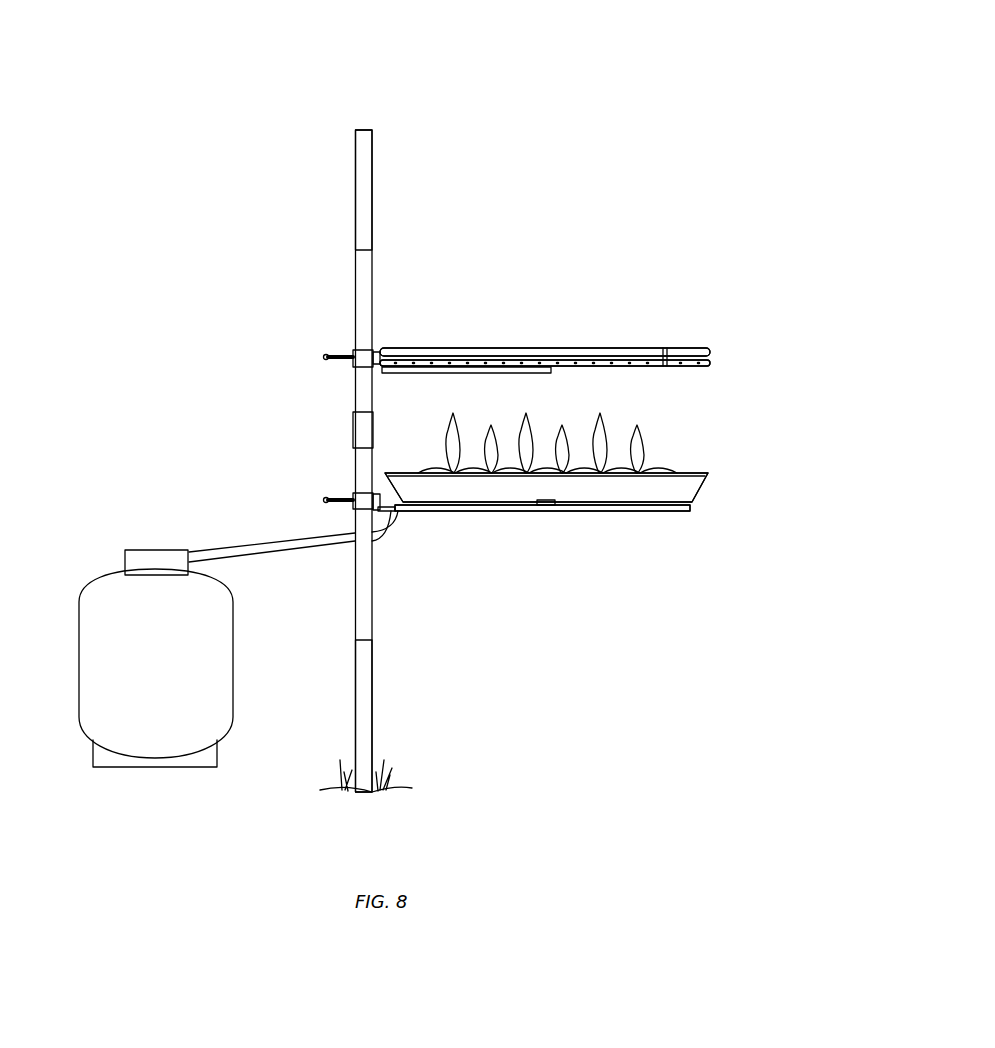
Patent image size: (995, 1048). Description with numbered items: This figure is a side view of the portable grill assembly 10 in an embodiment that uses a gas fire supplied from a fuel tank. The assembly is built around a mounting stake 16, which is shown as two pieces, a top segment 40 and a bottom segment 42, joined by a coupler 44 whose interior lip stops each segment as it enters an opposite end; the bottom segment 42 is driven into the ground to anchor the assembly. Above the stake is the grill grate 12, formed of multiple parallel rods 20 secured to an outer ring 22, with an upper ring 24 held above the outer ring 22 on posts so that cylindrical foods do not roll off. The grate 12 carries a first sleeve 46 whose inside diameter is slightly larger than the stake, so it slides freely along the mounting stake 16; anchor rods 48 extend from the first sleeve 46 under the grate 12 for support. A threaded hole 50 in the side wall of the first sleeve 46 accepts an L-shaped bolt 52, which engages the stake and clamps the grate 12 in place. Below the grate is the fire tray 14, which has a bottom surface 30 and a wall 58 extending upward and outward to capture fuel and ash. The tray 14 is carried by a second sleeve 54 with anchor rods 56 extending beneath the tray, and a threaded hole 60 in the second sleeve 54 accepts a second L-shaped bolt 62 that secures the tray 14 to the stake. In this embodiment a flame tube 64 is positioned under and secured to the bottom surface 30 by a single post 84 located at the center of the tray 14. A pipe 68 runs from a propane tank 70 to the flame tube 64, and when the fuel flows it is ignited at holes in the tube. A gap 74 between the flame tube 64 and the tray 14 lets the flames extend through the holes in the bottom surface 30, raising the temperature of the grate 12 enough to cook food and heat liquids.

The portable grill assembly 10 is at (585, 115).
The grill grate 12 is at (572, 352).
The fire tray 14 is at (560, 493).
The mounting stake 16 is at (357, 225).
The rods 20 is at (507, 365).
The outer ring 22 is at (582, 365).
The upper ring 24 is at (543, 350).
The bottom surface 30 is at (605, 500).
The top segment 40 is at (360, 200).
The bottom segment 42 is at (360, 697).
The coupler 44 is at (365, 416).
The first sleeve 46 is at (352, 361).
The anchor rods 48 is at (518, 370).
The threaded hole 50 is at (353, 357).
The bolt 52 is at (333, 356).
The second sleeve 54 is at (352, 506).
The anchor rods 56 is at (467, 514).
The wall 58 is at (558, 483).
The threaded hole 60 is at (353, 498).
The bolt 62 is at (333, 499).
The flame tube 64 is at (588, 507).
The pipe 68 is at (274, 550).
The propane tank 70 is at (128, 674).
The gap 74 is at (712, 505).
The post 84 is at (547, 502).